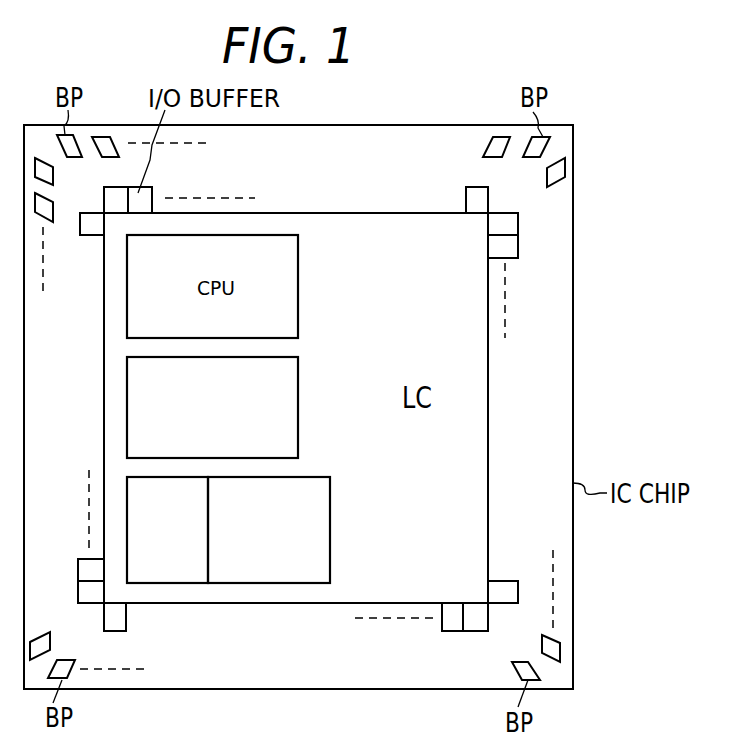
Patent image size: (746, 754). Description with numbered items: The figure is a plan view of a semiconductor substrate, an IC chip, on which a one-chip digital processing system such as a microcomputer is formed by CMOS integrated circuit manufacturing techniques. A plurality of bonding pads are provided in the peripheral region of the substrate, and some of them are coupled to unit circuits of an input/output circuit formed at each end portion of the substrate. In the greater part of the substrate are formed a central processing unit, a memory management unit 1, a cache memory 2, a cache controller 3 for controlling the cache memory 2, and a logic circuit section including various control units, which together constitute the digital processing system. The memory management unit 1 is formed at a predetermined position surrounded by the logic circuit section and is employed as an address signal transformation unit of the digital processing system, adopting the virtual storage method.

The memory management unit 1 is at (298, 378).
The cache memory 2 is at (167, 583).
The cache controller 3 is at (330, 503).